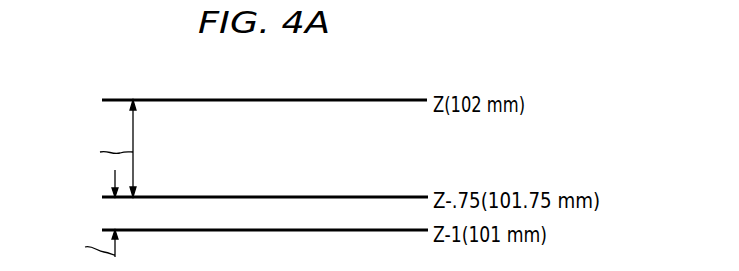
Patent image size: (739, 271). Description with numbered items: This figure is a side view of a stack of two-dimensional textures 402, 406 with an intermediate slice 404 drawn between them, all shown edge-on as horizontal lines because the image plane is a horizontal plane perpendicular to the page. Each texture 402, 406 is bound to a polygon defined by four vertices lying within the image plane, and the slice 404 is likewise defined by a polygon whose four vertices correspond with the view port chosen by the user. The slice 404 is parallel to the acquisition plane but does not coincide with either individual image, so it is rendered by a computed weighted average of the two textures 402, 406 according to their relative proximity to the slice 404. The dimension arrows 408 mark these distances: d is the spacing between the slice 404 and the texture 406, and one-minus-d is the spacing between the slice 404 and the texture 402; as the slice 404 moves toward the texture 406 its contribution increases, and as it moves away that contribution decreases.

The 2D texture 402 is at (328, 100).
The slice 404 is at (257, 197).
The 2D texture 406 is at (350, 230).
The dimension arrows / spacing indicators 408 is at (135, 107).